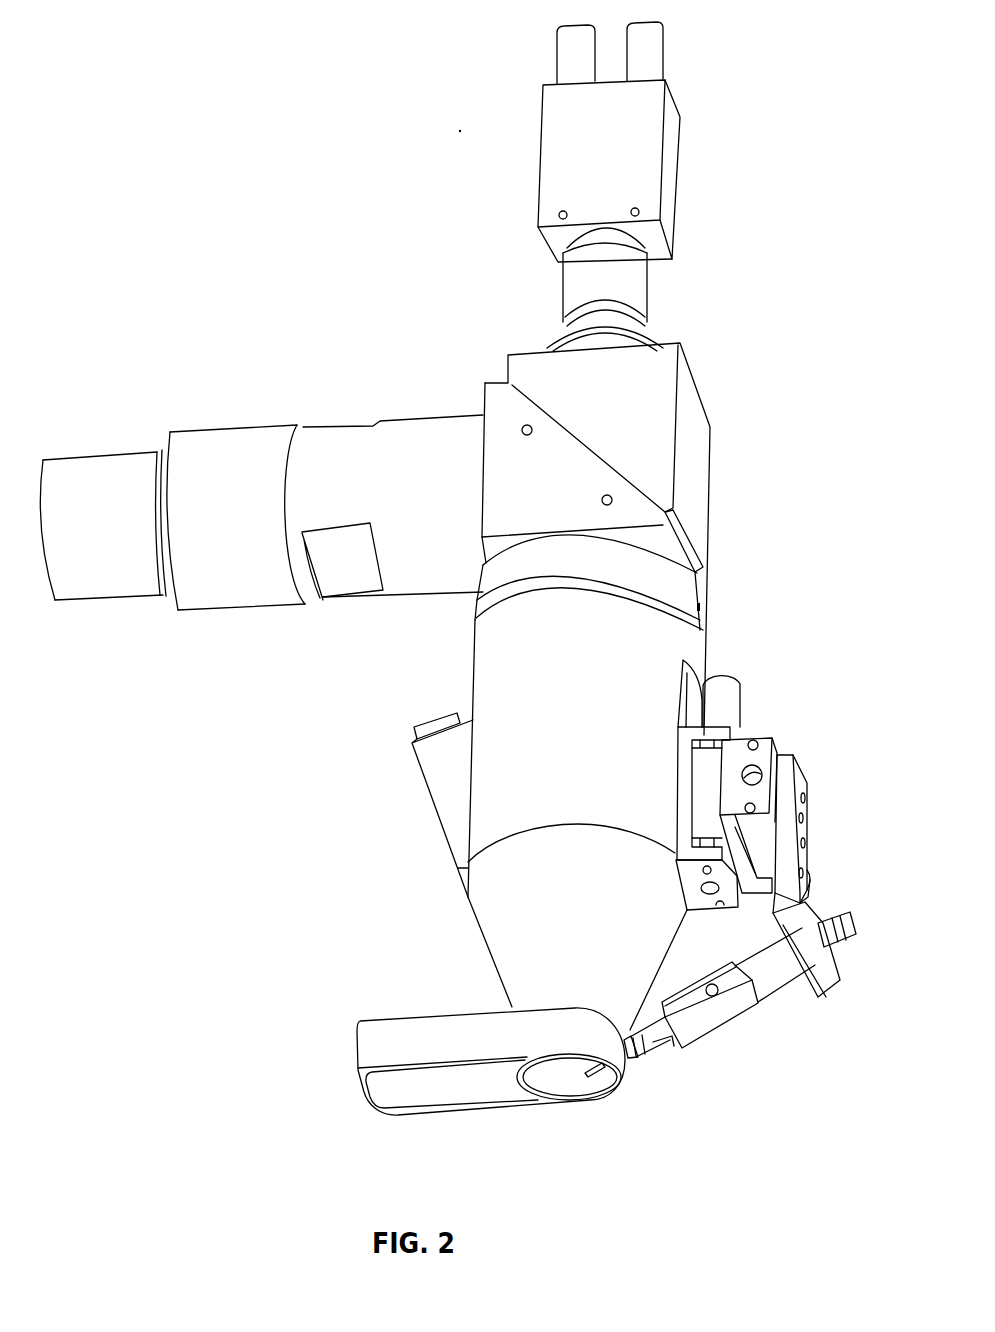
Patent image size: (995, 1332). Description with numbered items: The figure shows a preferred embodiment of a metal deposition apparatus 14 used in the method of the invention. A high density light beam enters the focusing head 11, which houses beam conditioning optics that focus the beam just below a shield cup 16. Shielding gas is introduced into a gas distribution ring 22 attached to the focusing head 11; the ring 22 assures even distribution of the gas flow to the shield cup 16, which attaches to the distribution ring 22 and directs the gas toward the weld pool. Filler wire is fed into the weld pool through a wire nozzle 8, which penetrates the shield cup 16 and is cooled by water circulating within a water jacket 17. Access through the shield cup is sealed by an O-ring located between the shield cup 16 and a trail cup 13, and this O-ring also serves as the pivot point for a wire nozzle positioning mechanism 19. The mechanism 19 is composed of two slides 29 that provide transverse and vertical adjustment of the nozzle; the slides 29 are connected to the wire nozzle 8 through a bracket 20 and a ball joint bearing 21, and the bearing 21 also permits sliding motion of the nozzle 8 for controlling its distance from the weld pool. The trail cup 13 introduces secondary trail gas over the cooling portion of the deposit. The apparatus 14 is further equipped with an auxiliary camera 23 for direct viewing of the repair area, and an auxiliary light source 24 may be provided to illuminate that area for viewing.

The wire nozzle 8 is at (633, 1050).
The focusing head 11 is at (702, 497).
The trail cup 13 is at (448, 1097).
The metal deposition apparatus 14 is at (760, 390).
The shield cup 16 is at (697, 655).
The water jacket 17 is at (692, 1038).
The wire nozzle positioning mechanism 19 is at (763, 742).
The bracket 20 is at (803, 822).
The ball joint bearing 21 is at (785, 985).
The gas distribution ring 22 is at (688, 578).
The auxiliary camera 23 is at (671, 223).
The auxiliary light source 24 is at (430, 753).
The slides 29 is at (730, 705).